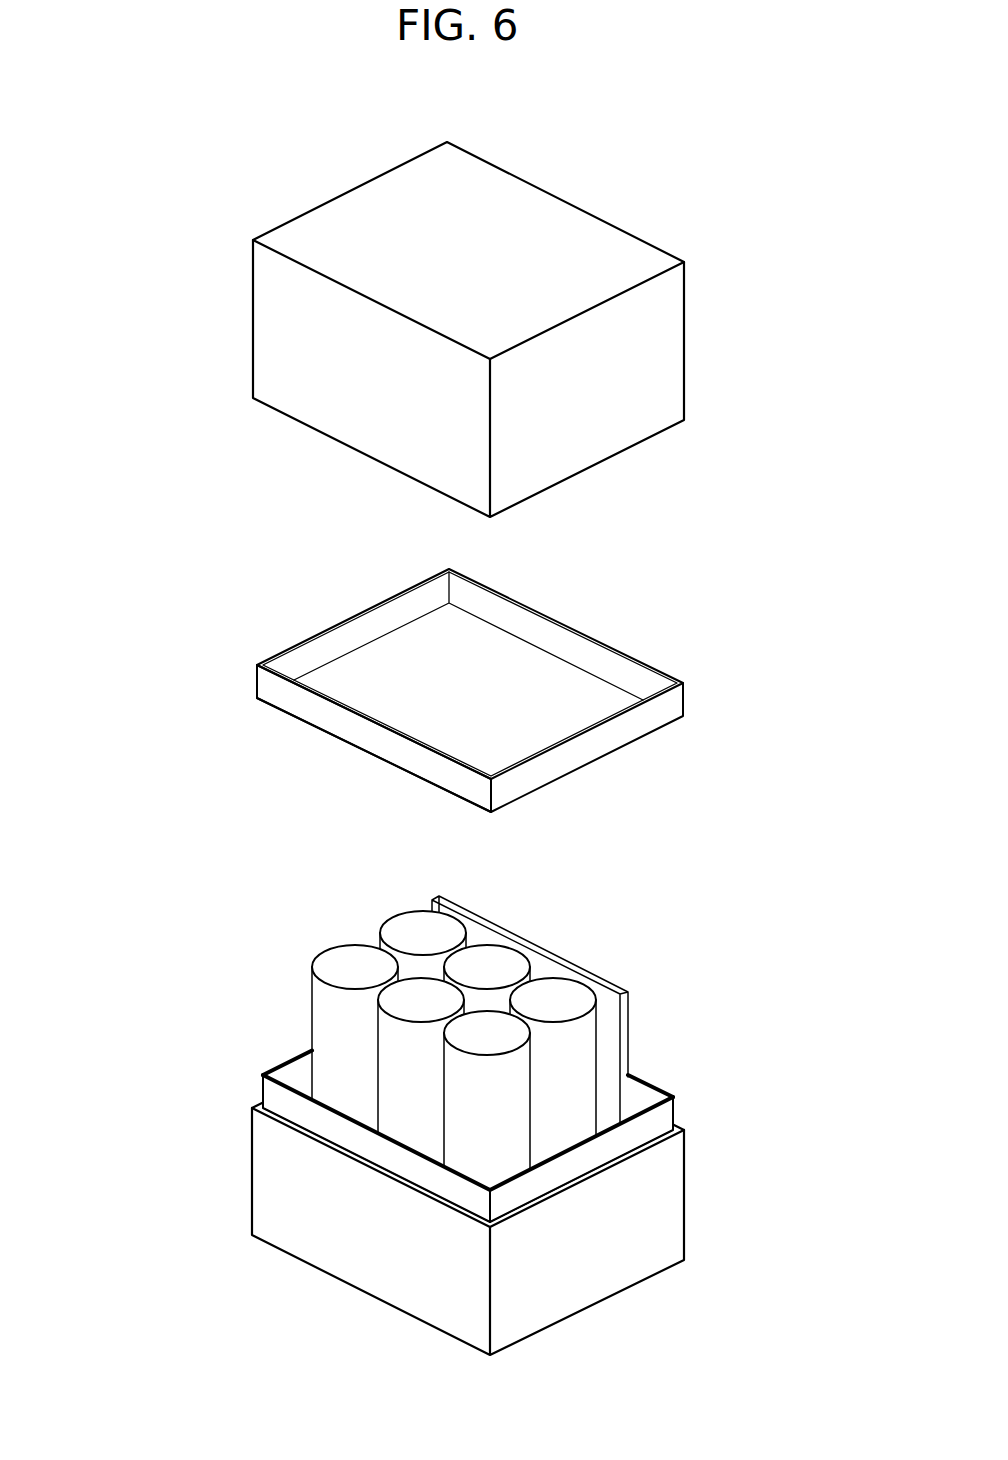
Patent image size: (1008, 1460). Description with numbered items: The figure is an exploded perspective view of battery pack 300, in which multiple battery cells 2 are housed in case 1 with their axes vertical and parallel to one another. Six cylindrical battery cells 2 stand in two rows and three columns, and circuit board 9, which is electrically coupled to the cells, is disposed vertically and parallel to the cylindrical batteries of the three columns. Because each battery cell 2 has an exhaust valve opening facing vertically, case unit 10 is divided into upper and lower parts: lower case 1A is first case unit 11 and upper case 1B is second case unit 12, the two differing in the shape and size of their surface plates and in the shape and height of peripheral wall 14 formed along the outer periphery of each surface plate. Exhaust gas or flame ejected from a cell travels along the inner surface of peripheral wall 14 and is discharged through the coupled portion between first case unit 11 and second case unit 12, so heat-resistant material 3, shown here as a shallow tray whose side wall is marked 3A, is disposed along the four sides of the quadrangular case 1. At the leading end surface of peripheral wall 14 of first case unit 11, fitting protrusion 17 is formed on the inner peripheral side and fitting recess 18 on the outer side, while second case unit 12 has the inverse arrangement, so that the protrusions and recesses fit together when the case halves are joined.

The battery pack 300 is at (233, 168).
The case 1 is at (108, 401).
The upper case 1B is at (227, 322).
The lower case 1A is at (258, 1042).
The case unit 10 is at (488, 748).
The second case unit 12 is at (712, 333).
The first case unit 11 is at (703, 1220).
The peripheral wall 14 is at (528, 225).
The heat-resistant material 3 is at (315, 598).
The tray side wall 3A is at (377, 747).
The battery cell 2 is at (333, 1020).
The circuit board 9 is at (539, 970).
The fitting protrusion 17 is at (307, 1120).
The fitting recess 18 is at (368, 1145).